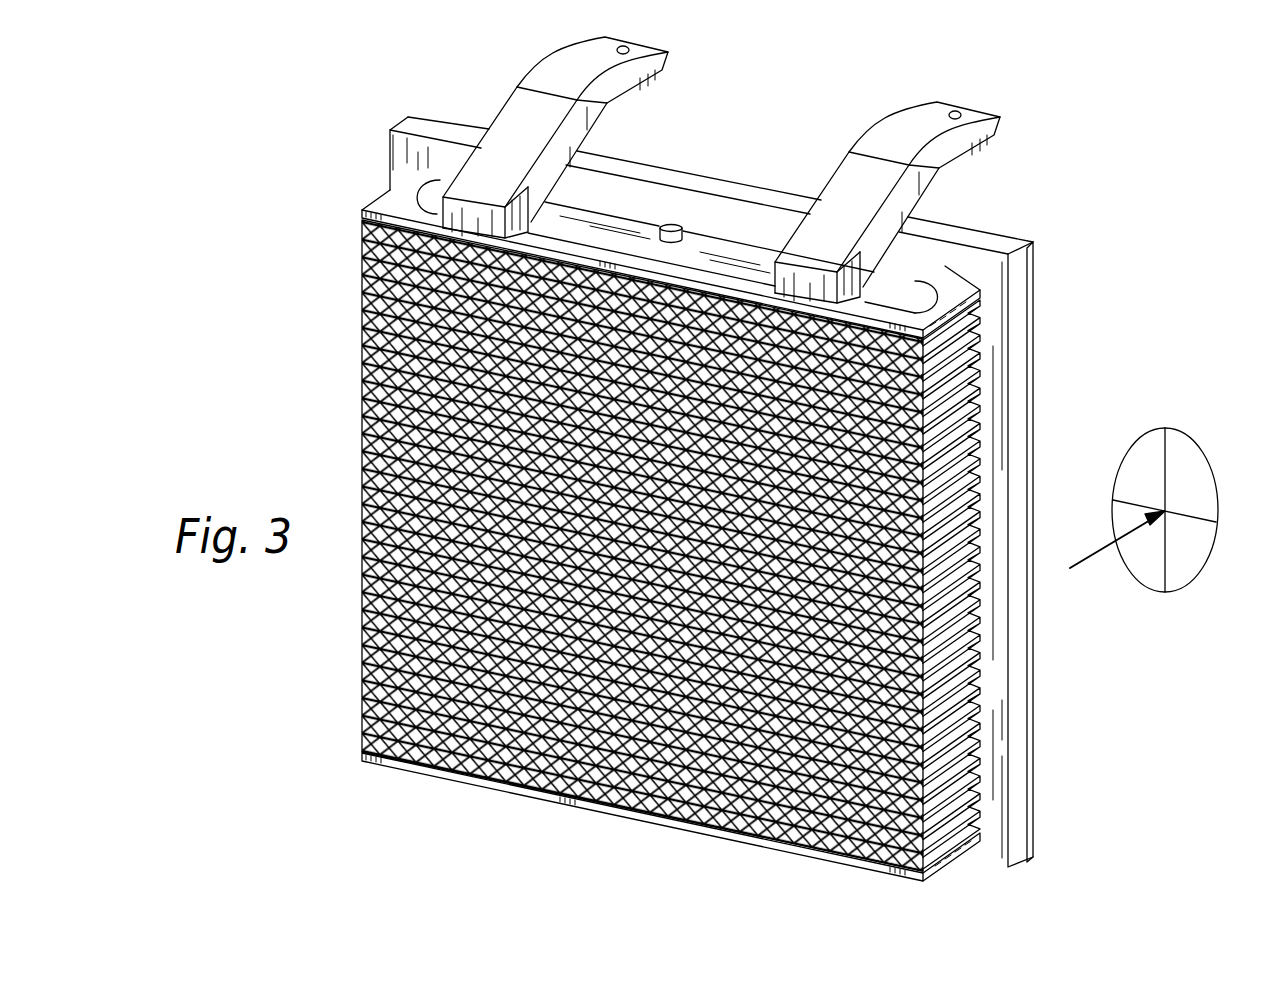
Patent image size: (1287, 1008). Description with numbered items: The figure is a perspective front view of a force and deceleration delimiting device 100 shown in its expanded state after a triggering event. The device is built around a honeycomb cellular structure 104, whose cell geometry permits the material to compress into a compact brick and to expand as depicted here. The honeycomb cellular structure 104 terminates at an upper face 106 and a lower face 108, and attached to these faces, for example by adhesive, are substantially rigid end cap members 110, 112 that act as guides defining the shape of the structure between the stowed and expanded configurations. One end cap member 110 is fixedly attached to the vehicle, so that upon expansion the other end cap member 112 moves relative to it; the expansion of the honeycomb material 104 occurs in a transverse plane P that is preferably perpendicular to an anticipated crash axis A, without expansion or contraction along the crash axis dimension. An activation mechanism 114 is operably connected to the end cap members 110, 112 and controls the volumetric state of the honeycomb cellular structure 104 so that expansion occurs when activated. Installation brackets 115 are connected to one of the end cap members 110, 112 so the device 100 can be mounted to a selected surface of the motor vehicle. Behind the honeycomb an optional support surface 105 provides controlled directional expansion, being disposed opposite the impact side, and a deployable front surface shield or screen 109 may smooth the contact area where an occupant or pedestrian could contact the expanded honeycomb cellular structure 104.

The force and deceleration delimiting device 100 is at (328, 173).
The honeycomb cellular structure 104 is at (962, 625).
The support surface 105 is at (1020, 790).
The upper face 106 is at (880, 300).
The lower face 108 is at (455, 767).
The front surface shield or screen 109 is at (1040, 443).
The end cap member 110 is at (957, 313).
The end cap member 112 is at (700, 830).
The activation mechanism 114 is at (673, 227).
The installation bracket 115 is at (583, 67).
The crash axis A is at (1098, 548).
The transverse plane P is at (1183, 543).